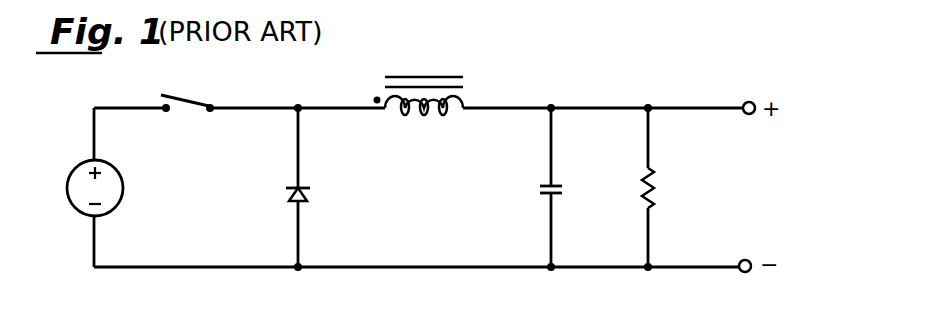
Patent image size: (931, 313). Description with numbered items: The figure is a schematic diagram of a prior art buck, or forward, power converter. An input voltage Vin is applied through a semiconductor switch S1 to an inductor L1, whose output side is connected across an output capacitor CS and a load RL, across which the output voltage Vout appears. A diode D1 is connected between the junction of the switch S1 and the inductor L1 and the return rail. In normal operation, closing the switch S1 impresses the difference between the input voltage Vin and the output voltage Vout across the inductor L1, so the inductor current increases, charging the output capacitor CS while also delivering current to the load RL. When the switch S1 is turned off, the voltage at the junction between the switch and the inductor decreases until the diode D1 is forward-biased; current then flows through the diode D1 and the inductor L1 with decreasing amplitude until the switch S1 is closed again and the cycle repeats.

The semiconductor switch S1 is at (187, 121).
The diode D1 is at (316, 194).
The inductor L1 is at (419, 114).
The output capacitor CS is at (535, 197).
The load RL is at (661, 188).
The input voltage Vin is at (113, 188).
The output voltage Vout is at (808, 185).